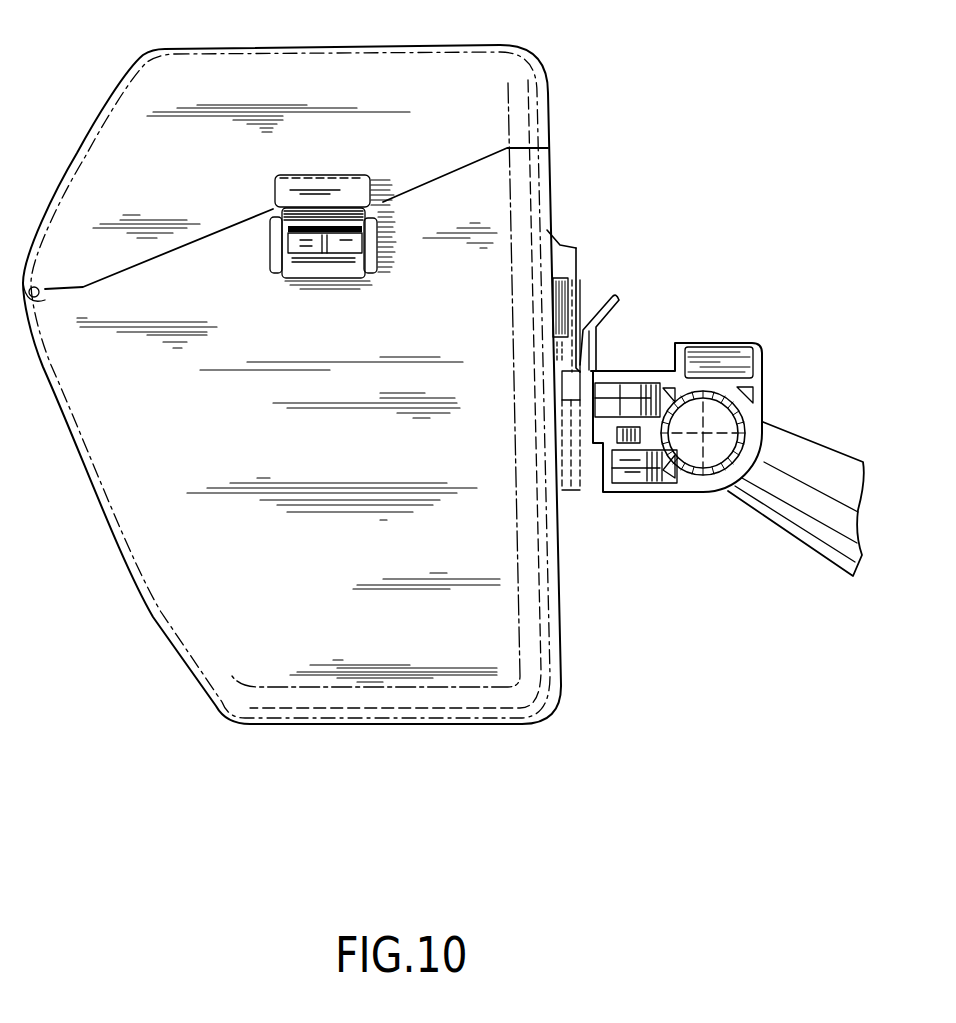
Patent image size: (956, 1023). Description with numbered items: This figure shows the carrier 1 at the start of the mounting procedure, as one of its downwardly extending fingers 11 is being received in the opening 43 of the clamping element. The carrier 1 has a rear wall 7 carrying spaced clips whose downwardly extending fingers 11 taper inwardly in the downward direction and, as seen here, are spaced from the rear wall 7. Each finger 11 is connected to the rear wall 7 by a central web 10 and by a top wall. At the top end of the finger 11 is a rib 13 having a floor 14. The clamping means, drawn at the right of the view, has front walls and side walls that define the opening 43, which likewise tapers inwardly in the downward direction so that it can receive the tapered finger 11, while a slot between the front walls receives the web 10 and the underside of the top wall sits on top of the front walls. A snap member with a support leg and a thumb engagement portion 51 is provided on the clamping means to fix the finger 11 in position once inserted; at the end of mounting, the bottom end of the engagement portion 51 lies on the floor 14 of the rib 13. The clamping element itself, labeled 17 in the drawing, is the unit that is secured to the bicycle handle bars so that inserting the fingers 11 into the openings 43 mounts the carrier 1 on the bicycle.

The carrier 1 is at (572, 714).
The rear wall 7 is at (560, 644).
The central web 10 is at (558, 308).
The downwardly extending finger 11 is at (580, 282).
The rib 13 is at (560, 235).
The floor 14 is at (573, 247).
The holder 17 is at (700, 530).
The opening 43 is at (575, 487).
The thumb engagement portion 51 is at (612, 297).